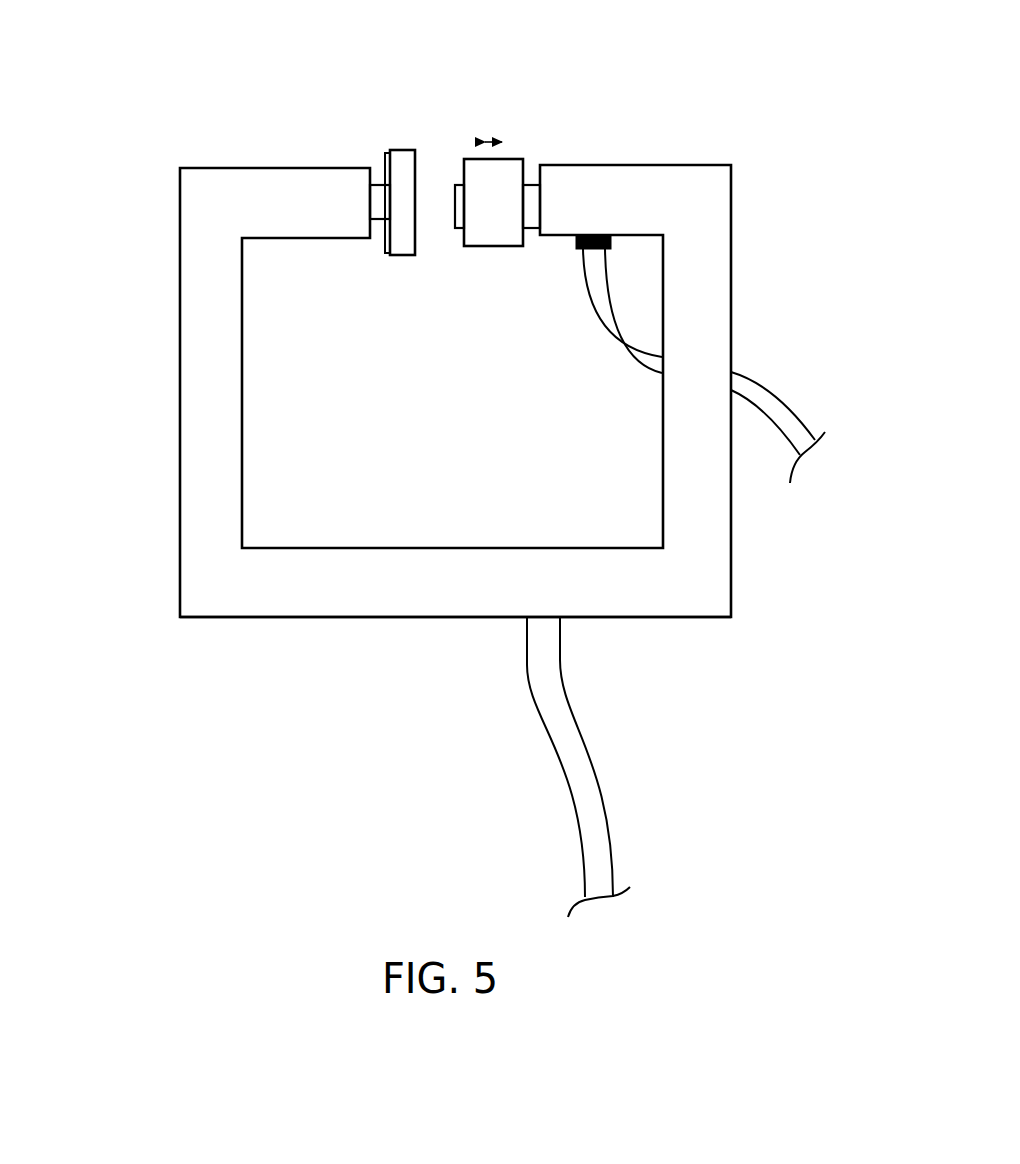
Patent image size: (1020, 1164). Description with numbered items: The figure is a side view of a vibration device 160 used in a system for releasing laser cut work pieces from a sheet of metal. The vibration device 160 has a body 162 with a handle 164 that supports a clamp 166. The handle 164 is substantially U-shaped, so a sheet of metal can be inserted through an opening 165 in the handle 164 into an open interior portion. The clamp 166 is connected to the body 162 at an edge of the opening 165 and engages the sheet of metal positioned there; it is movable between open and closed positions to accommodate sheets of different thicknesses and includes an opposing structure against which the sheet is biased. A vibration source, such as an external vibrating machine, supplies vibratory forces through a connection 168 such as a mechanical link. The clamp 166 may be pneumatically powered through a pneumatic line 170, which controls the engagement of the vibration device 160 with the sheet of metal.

The vibration device 160 is at (742, 104).
The body 162 is at (158, 525).
The handle 164 is at (370, 599).
The opening 165 is at (443, 162).
The clamp 166 is at (507, 172).
The connection 168 is at (593, 828).
The pneumatic line 170 is at (795, 428).